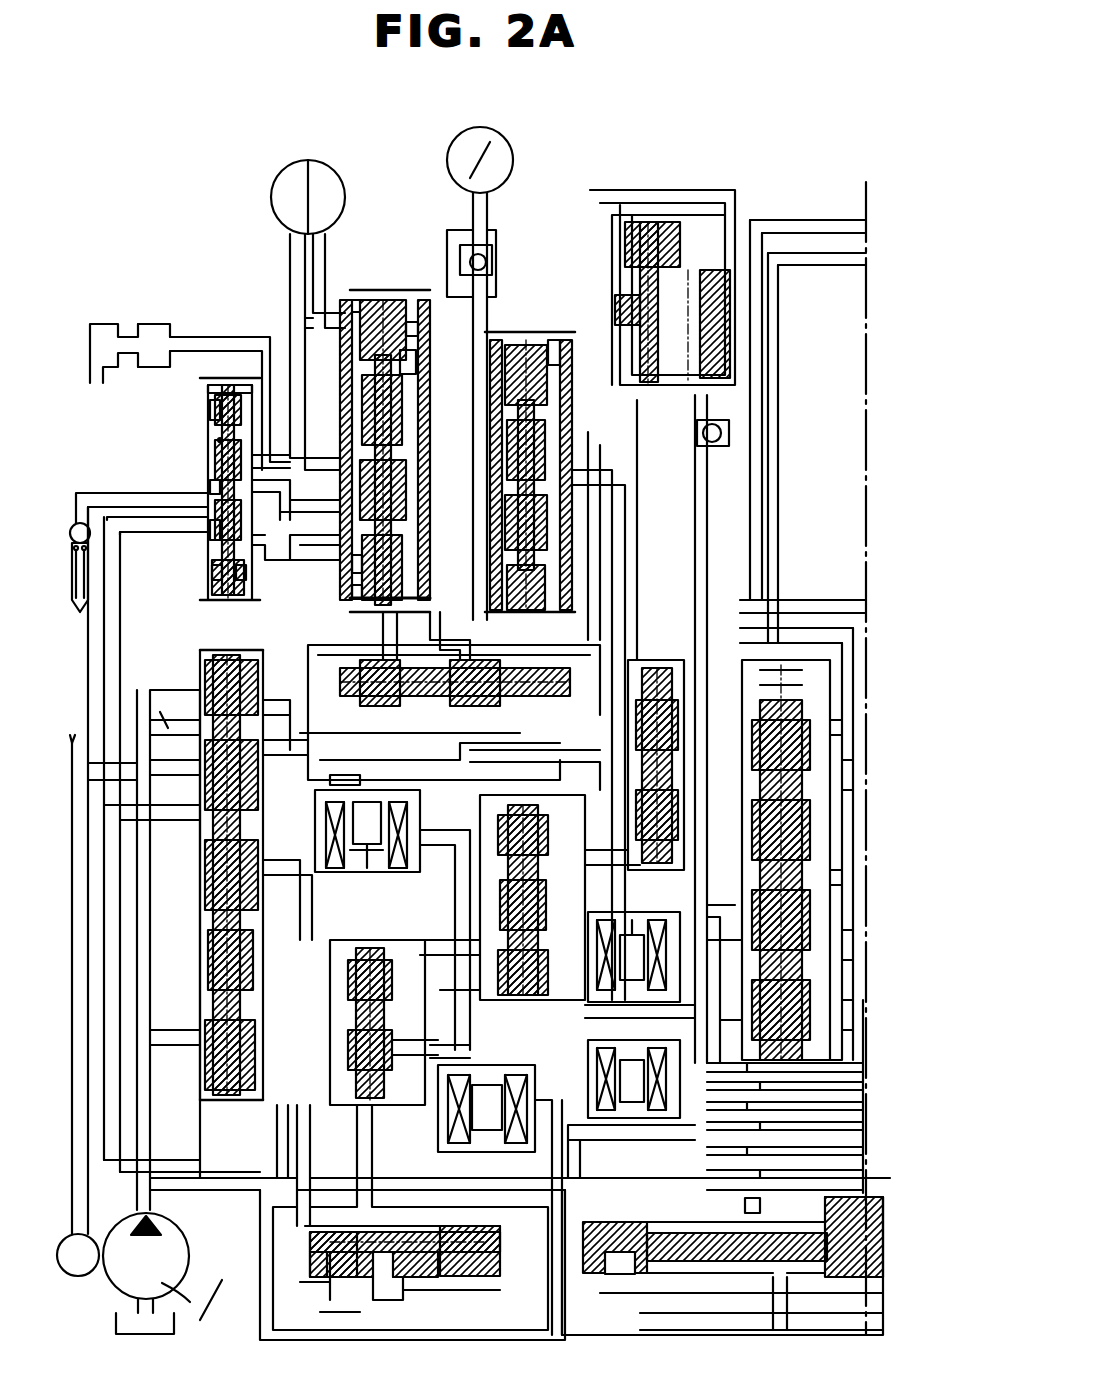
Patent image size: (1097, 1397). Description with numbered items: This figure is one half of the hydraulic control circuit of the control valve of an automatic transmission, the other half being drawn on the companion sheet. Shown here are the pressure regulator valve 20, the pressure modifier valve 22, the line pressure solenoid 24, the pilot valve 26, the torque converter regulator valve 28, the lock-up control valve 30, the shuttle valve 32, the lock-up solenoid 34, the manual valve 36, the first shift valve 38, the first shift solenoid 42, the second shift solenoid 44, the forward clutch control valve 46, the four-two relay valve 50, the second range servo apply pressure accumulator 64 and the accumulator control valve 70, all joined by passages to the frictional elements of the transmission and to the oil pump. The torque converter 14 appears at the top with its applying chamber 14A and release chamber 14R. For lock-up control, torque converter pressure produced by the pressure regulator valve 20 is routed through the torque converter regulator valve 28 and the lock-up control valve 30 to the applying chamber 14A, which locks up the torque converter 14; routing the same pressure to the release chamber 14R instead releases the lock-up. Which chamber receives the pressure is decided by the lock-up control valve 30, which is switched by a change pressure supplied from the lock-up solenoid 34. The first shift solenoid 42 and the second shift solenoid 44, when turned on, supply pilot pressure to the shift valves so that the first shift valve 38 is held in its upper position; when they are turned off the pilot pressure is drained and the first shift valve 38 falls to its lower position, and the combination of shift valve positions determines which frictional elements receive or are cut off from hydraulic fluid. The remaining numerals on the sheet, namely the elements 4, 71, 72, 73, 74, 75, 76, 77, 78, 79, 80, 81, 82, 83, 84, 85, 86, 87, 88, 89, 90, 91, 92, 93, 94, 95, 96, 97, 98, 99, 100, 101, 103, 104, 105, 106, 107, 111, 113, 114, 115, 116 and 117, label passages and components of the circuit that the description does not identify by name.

The torque converter 14 is at (328, 168).
The release chamber 14R is at (272, 207).
The applying chamber 14A is at (345, 195).
The line 4 is at (345, 388).
The pressure regulator valve 20 is at (222, 650).
The pressure modifier valve 22 is at (358, 1112).
The line pressure solenoid 24 is at (522, 1068).
The pilot valve 26 is at (440, 1280).
The torque converter regulator valve 28 is at (205, 545).
The lock-up control valve 30 is at (375, 292).
The shuttle valve 32 is at (512, 660).
The lock-up solenoid 34 is at (350, 878).
The manual valve 36 is at (705, 1320).
The first shift valve 38 is at (795, 1020).
The first shift solenoid 42 is at (648, 915).
The second shift solenoid 44 is at (668, 1110).
The forward clutch control valve 46 is at (528, 340).
The 4-2 relay valve 50 is at (660, 668).
The second range servo apply pressure accumulator 64 is at (706, 205).
The accumulator control valve 70 is at (540, 955).
The line 71 is at (137, 978).
The line 72 is at (200, 720).
The line 73 is at (80, 730).
The line 74 is at (137, 1018).
The strainer 75 is at (97, 1252).
The line 76 is at (278, 1120).
The line 77 is at (277, 1160).
The line 78 is at (418, 835).
The line 79 is at (300, 895).
The line 80 is at (462, 1068).
The line 81 is at (465, 1005).
The relief valve 82 is at (76, 522).
The line 83 is at (300, 555).
The line 84 is at (104, 690).
The line 85 is at (270, 458).
The line 86 is at (290, 525).
The line 87 is at (258, 525).
The line 88 is at (232, 337).
The line 89 is at (170, 324).
The line 90 is at (90, 324).
The line 91 is at (290, 268).
The line 92 is at (338, 313).
The line 93 is at (328, 248).
The line 94 is at (410, 360).
The line 95 is at (395, 656).
The line 96 is at (470, 645).
The line 97 is at (310, 735).
The line 98 is at (358, 778).
The line 99 is at (585, 1015).
The line 100 is at (780, 1012).
The line 101 is at (648, 1125).
The line 103 is at (487, 360).
The line 104 is at (520, 458).
The line 105 is at (520, 432).
The line 106 is at (580, 483).
The orifice 107 is at (492, 258).
The line 111 is at (738, 600).
The line 113 is at (778, 390).
The orifice 114 is at (742, 436).
The line 115 is at (525, 703).
The line 116 is at (812, 970).
The line 117 is at (812, 950).